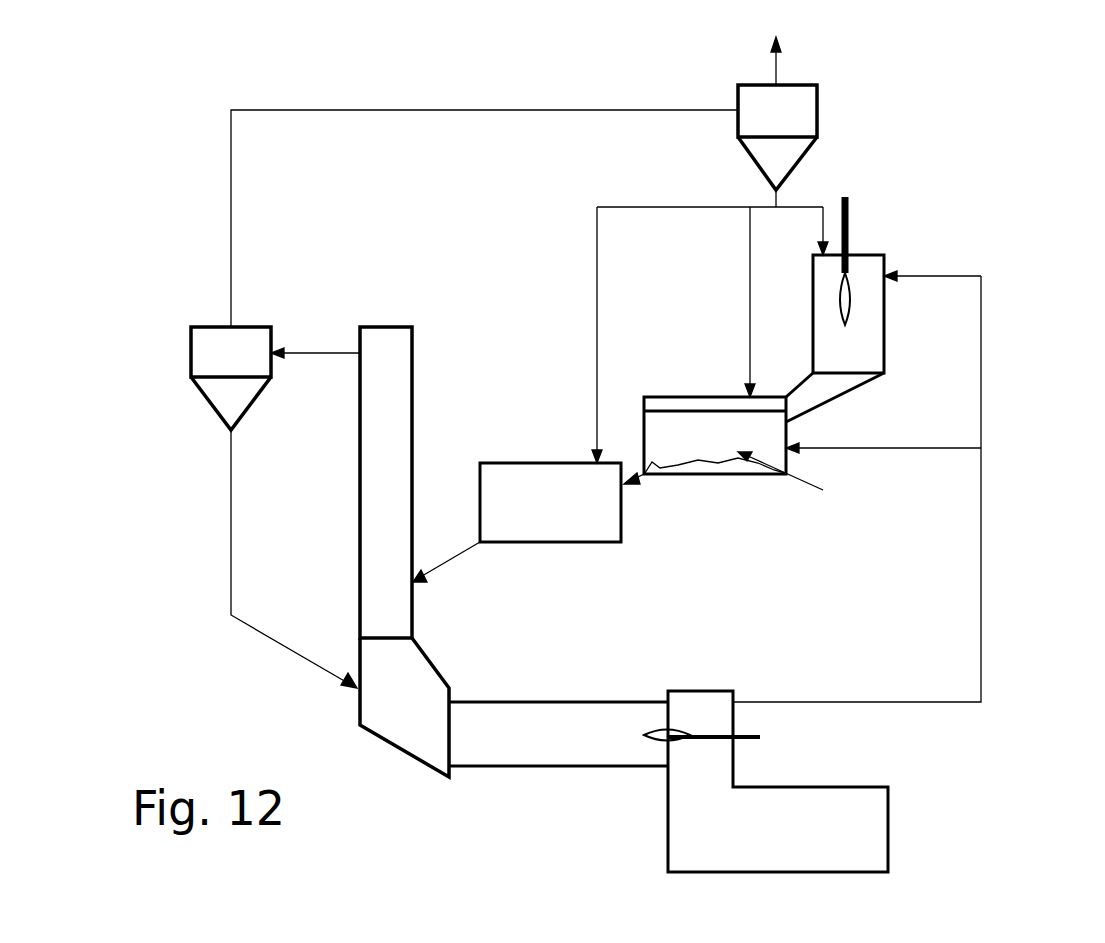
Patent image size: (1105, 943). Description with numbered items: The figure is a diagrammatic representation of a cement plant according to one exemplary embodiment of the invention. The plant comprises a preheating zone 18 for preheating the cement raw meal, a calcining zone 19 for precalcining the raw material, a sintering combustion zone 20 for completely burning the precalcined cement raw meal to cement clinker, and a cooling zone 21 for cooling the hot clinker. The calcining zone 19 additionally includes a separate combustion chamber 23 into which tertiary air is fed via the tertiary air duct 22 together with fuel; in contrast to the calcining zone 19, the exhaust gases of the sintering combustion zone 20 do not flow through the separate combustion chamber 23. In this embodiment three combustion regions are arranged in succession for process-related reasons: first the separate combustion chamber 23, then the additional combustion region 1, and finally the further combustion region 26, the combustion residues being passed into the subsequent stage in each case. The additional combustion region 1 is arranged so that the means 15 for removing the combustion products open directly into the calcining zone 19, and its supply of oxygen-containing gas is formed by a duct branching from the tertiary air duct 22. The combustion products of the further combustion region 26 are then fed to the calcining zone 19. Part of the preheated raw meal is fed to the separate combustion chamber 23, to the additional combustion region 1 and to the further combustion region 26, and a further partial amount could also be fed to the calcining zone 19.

The additional combustion region 1 is at (676, 397).
The means for removing the combustion products 15 is at (640, 480).
The preheating zone 18 is at (800, 110).
The calcining zone 19 is at (375, 487).
The sintering combustion zone 20 is at (542, 748).
The cooling zone 21 is at (852, 837).
The tertiary air duct 22 is at (981, 580).
The separate combustion chamber 23 is at (865, 349).
The further combustion region 26 is at (517, 480).